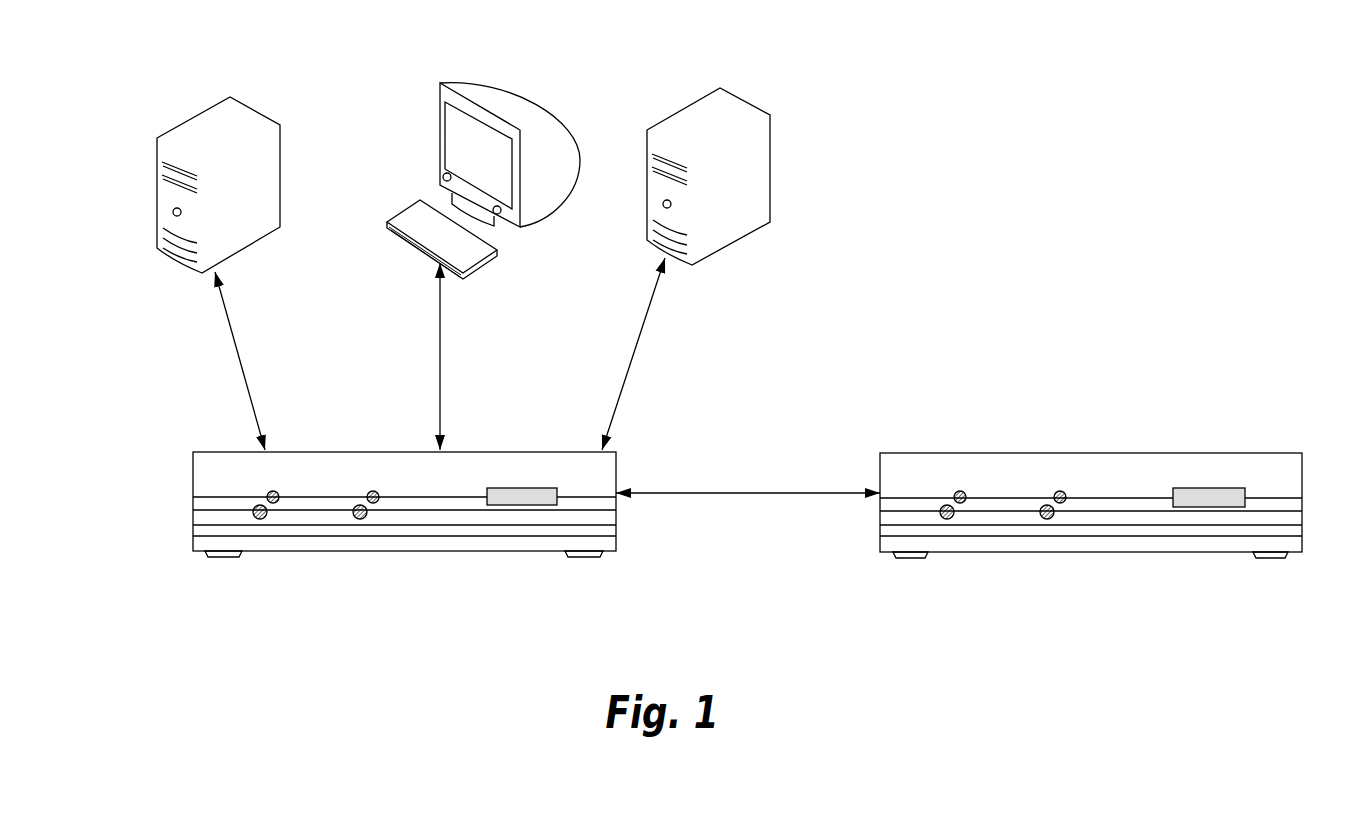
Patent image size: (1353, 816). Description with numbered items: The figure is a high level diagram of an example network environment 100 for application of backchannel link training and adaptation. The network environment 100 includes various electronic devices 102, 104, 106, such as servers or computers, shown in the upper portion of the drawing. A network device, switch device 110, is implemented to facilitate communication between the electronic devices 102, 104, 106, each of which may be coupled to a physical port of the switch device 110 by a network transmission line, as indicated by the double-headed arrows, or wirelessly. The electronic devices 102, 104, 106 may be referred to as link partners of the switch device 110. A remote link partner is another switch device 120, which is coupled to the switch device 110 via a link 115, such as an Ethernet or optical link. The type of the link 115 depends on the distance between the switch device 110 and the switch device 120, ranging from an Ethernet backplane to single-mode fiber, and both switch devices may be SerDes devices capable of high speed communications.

The network environment 100 is at (1174, 151).
The electronic device 102 is at (212, 108).
The electronic device 104 is at (442, 81).
The electronic device 106 is at (693, 102).
The switch device 110 is at (207, 450).
The link 115 is at (748, 480).
The switch device 120 is at (1277, 451).